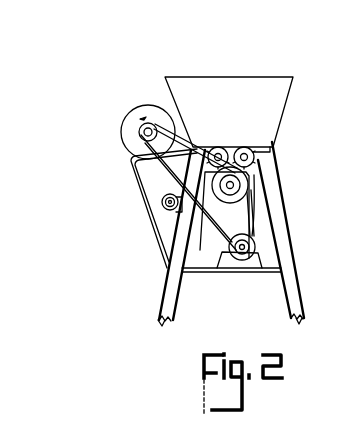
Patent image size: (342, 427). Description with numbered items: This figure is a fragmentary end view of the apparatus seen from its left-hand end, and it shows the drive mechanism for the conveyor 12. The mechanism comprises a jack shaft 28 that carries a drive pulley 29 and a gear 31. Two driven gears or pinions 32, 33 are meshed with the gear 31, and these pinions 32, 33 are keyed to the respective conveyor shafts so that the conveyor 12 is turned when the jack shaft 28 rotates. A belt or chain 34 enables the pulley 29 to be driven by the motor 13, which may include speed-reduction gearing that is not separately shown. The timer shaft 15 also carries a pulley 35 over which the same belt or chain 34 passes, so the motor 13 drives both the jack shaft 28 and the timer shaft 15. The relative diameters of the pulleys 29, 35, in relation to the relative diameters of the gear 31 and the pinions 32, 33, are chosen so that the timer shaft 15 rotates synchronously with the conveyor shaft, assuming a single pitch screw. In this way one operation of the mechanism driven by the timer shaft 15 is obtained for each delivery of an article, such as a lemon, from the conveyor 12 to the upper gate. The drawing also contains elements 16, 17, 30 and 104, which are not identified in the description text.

The conveyor 12 is at (231, 234).
The motor 13 is at (239, 259).
The timer shaft 15 is at (143, 126).
The drive belts 16 is at (197, 187).
The idler roller 17 is at (172, 203).
The jack shaft 28 is at (240, 185).
The drive pulley 29 is at (238, 193).
The hopper 30 is at (229, 112).
The gear 31 is at (272, 167).
The driven gear or pinion 32 is at (218, 147).
The driven gear or pinion 33 is at (246, 147).
The belt or chain 34 is at (251, 212).
The pulley 35 is at (142, 140).
The side plate 104 is at (144, 208).